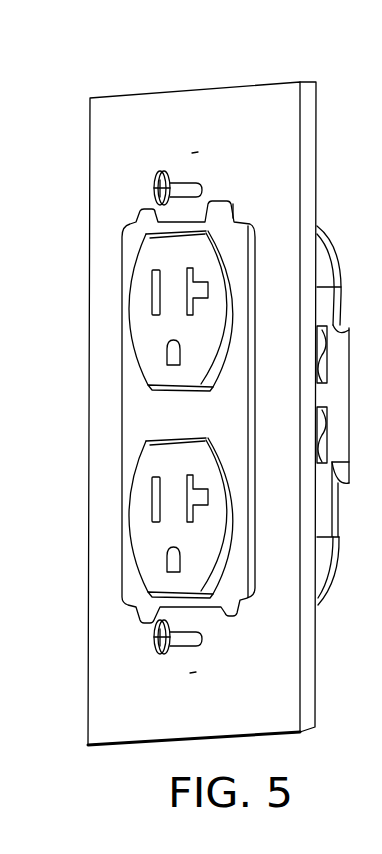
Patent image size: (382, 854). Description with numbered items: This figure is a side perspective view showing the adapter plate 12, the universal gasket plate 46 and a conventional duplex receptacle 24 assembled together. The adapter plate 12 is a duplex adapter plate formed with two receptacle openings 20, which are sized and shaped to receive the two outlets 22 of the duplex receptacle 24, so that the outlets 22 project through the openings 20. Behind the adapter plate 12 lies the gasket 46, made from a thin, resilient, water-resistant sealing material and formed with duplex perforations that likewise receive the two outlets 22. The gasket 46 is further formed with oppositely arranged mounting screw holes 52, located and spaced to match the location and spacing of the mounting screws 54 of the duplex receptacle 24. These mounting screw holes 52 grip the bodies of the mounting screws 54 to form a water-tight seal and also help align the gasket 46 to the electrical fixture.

The adapter plate 12 is at (138, 422).
The receptacle openings 20 is at (123, 311).
The outlets 22 is at (142, 288).
The duplex receptacle 24 is at (340, 338).
The universal gasket plate 46 is at (310, 103).
The mounting screw holes 52 is at (202, 180).
The mounting screws 54 is at (170, 173).